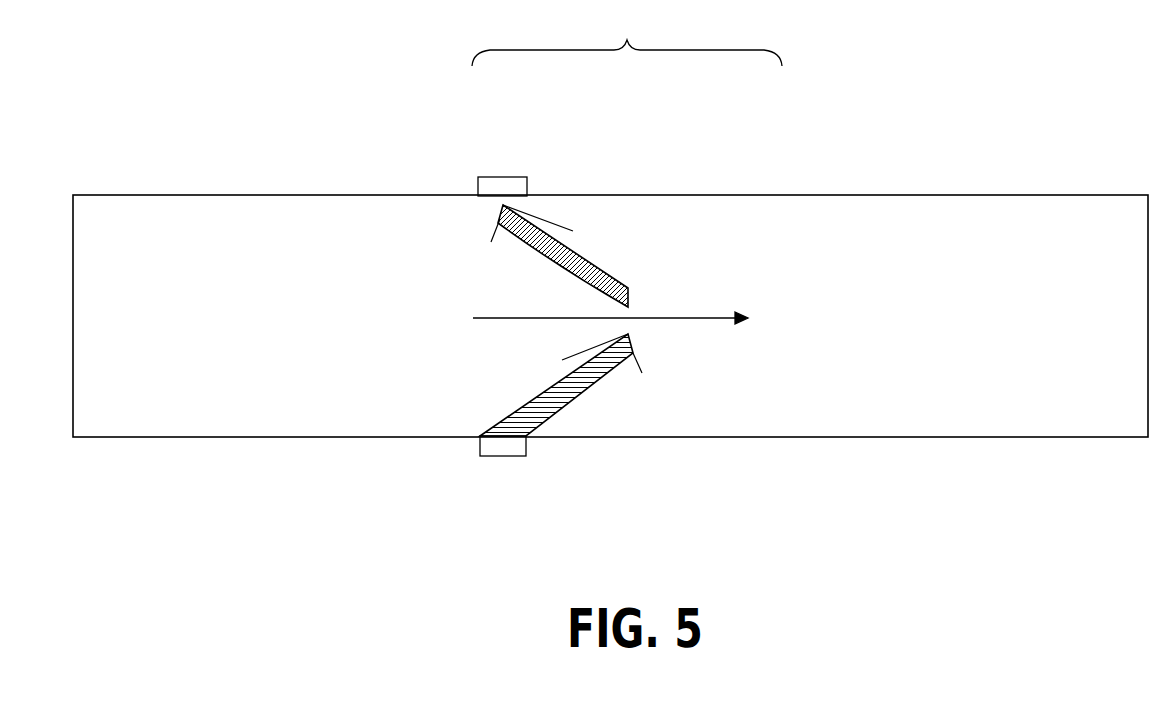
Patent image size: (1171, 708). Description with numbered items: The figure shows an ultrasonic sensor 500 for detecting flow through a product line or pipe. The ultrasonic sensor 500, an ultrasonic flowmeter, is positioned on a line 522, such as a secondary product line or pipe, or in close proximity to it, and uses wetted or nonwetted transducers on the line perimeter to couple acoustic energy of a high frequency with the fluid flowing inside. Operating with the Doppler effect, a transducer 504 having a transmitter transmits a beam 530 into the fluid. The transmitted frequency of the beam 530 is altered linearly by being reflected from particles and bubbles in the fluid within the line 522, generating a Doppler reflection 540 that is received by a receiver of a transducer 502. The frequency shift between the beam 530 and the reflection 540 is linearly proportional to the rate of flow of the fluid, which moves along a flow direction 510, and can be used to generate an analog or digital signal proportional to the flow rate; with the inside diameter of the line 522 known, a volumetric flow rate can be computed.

The ultrasonic sensor 500 is at (627, 36).
The transducer 502 is at (510, 177).
The transducer 504 is at (510, 456).
The flow direction 510 is at (688, 317).
The line 522 is at (178, 437).
The beam 530 is at (577, 388).
The Doppler reflection 540 is at (590, 257).